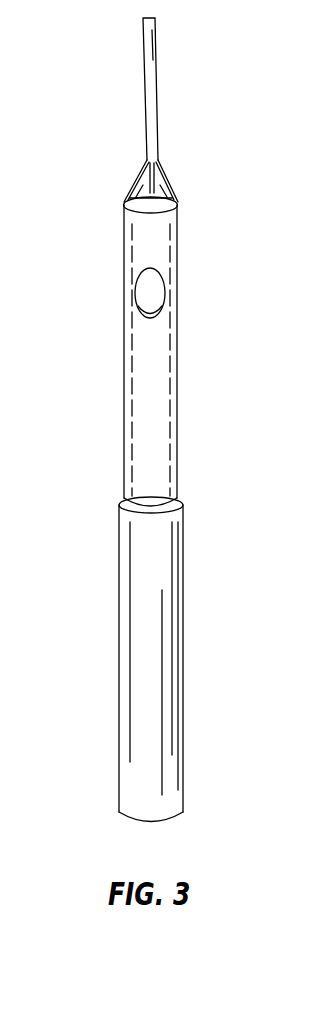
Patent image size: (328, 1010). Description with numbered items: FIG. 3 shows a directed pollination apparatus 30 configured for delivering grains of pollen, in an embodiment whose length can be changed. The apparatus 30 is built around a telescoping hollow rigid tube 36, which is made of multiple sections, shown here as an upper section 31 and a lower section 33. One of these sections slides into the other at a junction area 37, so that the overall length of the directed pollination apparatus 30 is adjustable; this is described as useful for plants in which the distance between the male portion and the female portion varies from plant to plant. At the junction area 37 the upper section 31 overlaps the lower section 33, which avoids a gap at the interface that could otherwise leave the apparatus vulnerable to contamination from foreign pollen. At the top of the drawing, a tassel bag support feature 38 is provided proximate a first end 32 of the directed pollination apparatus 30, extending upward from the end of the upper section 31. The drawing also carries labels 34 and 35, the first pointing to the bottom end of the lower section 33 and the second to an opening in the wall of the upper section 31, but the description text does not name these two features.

The directed pollination apparatus 30 is at (156, 440).
The upper section 31 is at (138, 351).
The first end 32 is at (100, 185).
The lower section 33 is at (102, 684).
The handle bottom end 34 is at (102, 837).
The opening 35 is at (111, 315).
The telescoping hollow rigid tube 36 is at (180, 360).
The junction area 37 is at (189, 465).
The tassel bag support feature 38 is at (208, 89).